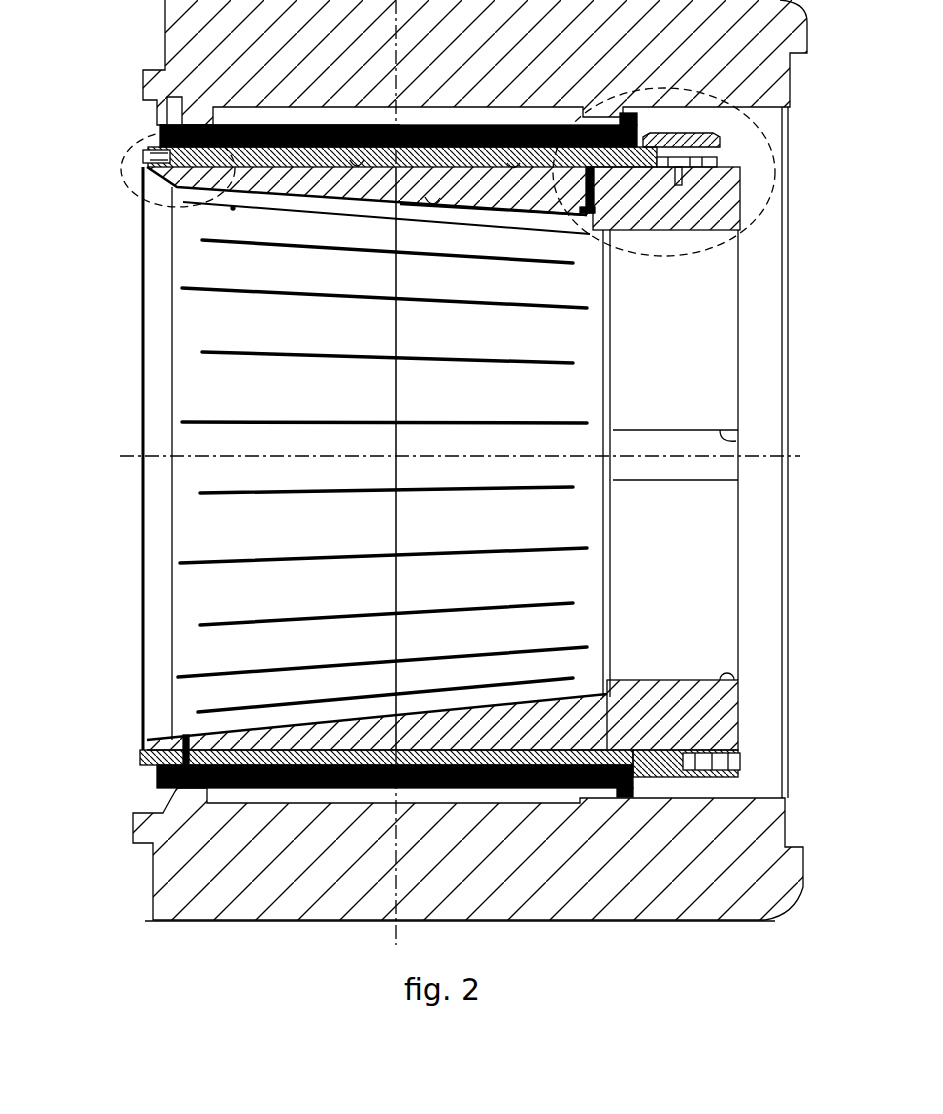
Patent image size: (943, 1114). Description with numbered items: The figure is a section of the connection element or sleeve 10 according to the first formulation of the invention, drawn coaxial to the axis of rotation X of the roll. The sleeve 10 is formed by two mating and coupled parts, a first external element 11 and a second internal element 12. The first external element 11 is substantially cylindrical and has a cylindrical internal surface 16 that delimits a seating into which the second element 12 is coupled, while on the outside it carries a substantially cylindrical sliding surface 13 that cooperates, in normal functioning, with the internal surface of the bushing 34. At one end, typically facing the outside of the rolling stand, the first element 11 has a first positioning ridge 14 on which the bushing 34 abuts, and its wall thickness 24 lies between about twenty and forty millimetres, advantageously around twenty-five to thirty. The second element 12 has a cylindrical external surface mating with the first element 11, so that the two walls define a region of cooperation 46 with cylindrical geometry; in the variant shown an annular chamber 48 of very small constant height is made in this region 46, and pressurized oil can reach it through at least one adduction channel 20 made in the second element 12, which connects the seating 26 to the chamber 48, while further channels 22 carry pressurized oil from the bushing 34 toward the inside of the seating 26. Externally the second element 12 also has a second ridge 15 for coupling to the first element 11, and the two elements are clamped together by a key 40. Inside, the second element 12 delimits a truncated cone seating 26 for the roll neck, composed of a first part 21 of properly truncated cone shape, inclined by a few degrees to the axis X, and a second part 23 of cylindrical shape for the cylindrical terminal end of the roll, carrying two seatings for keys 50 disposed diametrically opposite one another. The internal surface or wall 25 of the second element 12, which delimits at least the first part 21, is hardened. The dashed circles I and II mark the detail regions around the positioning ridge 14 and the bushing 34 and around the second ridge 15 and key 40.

The connection element or sleeve 10 is at (122, 120).
The first external element 11 is at (473, 153).
The second internal element 12 is at (372, 183).
The sliding surface 13 is at (247, 127).
The first positioning ridge 14 is at (668, 147).
The second ridge 15 is at (732, 152).
The cylindrical internal surface 16 is at (357, 160).
The adduction channel 20 is at (592, 192).
The first part 21 is at (433, 197).
The channels 22 is at (612, 768).
The second part 23 is at (735, 678).
The thickness 24 is at (148, 147).
The internal surface or wall 25 is at (470, 214).
The truncated cone seating 26 is at (192, 726).
The bushing 34 is at (297, 130).
The key 40 is at (697, 160).
The region of cooperation 46 is at (305, 182).
The annular chamber 48 is at (513, 163).
The seatings for keys 50 is at (740, 435).
The detail I is at (140, 192).
The detail II is at (767, 142).
The axis of rotation X is at (127, 457).